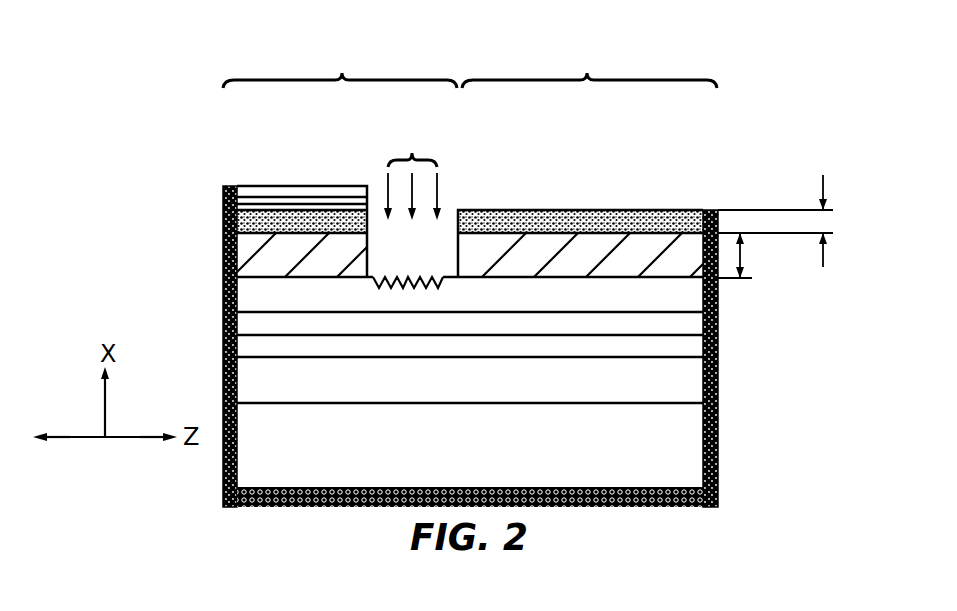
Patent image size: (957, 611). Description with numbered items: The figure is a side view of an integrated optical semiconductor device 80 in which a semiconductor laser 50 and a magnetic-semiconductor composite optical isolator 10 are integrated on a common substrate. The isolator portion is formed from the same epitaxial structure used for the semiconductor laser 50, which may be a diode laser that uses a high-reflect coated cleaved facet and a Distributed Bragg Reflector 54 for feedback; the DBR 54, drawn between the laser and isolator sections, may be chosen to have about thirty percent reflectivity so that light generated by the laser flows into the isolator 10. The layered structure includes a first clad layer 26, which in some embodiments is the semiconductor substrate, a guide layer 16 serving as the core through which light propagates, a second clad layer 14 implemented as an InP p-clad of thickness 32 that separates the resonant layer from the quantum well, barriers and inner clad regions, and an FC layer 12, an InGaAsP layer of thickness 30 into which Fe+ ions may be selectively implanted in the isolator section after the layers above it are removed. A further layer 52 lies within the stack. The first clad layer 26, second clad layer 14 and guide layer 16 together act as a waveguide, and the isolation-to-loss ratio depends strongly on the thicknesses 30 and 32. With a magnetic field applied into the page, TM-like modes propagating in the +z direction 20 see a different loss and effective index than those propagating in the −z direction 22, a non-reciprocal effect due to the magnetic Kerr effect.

The integrated optical semiconductor device 80 is at (142, 153).
The semiconductor laser 50 is at (340, 146).
The magnetic-semiconductor composite optical isolator 10 is at (587, 146).
The Distributed Bragg Reflector (DBR) 54 is at (408, 193).
The FC layer 12 is at (547, 213).
The second clad layer 14 is at (248, 253).
The guide layer 16 is at (693, 345).
The active/lower layer 52 is at (693, 387).
The first clad layer 26 is at (693, 448).
The thickness (tc) 30 is at (833, 222).
The thickness (tp) 32 is at (745, 258).
The +z direction 20 is at (140, 438).
The −z direction 22 is at (72, 438).